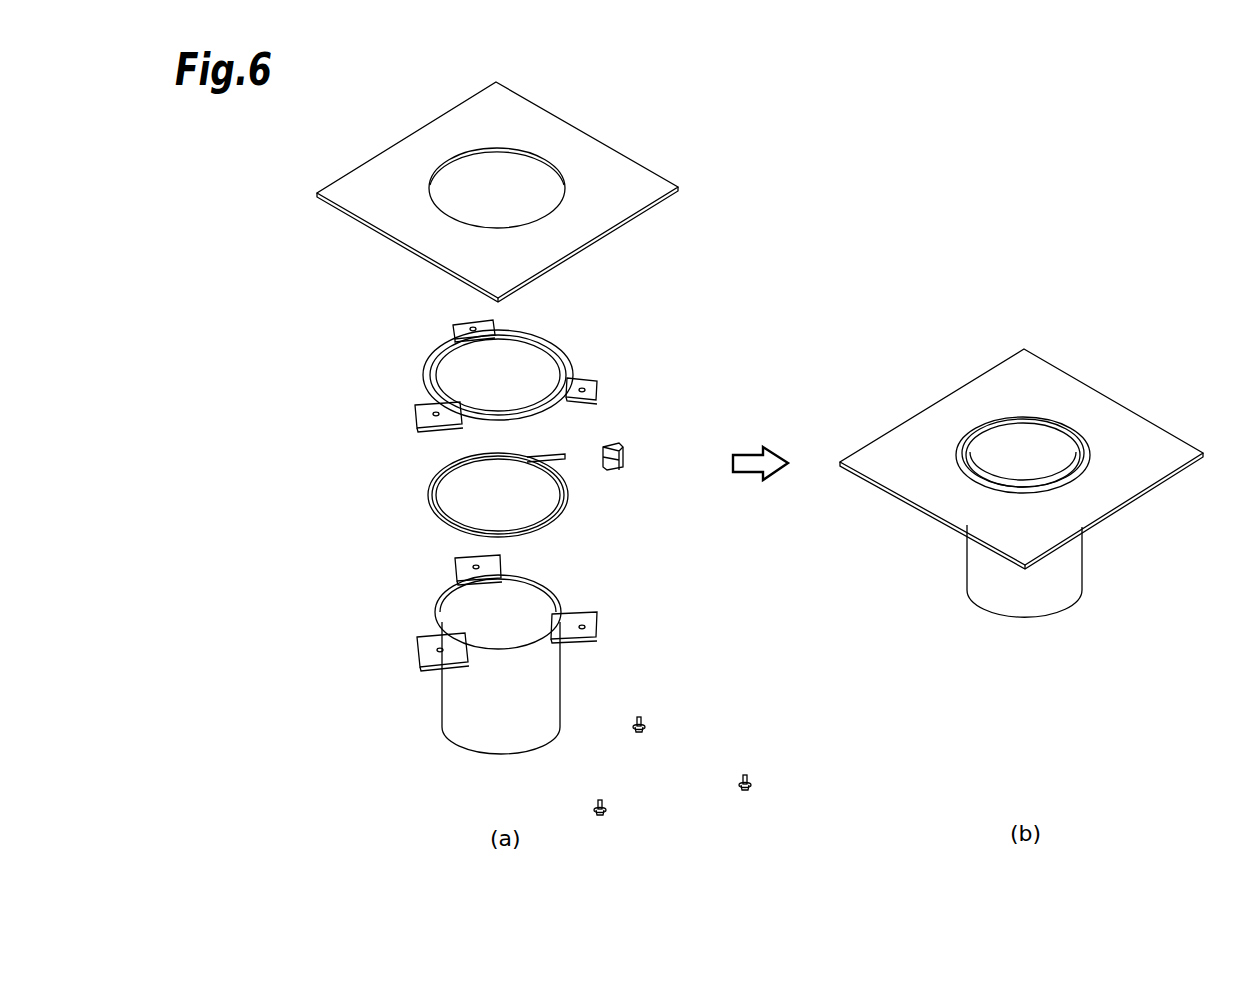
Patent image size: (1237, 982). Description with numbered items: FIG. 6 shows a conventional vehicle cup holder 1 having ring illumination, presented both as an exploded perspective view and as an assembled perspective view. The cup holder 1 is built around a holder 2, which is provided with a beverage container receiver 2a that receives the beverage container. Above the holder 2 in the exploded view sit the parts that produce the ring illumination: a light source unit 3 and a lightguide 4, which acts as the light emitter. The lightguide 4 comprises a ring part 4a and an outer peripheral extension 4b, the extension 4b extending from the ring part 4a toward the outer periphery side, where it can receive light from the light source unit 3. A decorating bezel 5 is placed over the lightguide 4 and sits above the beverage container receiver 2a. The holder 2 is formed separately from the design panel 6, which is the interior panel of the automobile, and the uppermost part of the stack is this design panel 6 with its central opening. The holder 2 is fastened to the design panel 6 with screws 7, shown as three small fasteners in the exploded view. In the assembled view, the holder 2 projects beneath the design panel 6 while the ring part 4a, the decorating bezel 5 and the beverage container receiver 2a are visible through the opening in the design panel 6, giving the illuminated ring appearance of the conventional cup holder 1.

The vehicle cup holder 1 is at (379, 342).
The holder 2 is at (442, 677).
The beverage container receiver 2a is at (523, 615).
The light source unit 3 is at (622, 460).
The lightguide 4 is at (427, 503).
The ring part 4a is at (560, 508).
The outer peripheral extension 4b is at (545, 453).
The decorating bezel 5 is at (570, 358).
The design panel 6 is at (590, 240).
The screws 7 is at (640, 735).